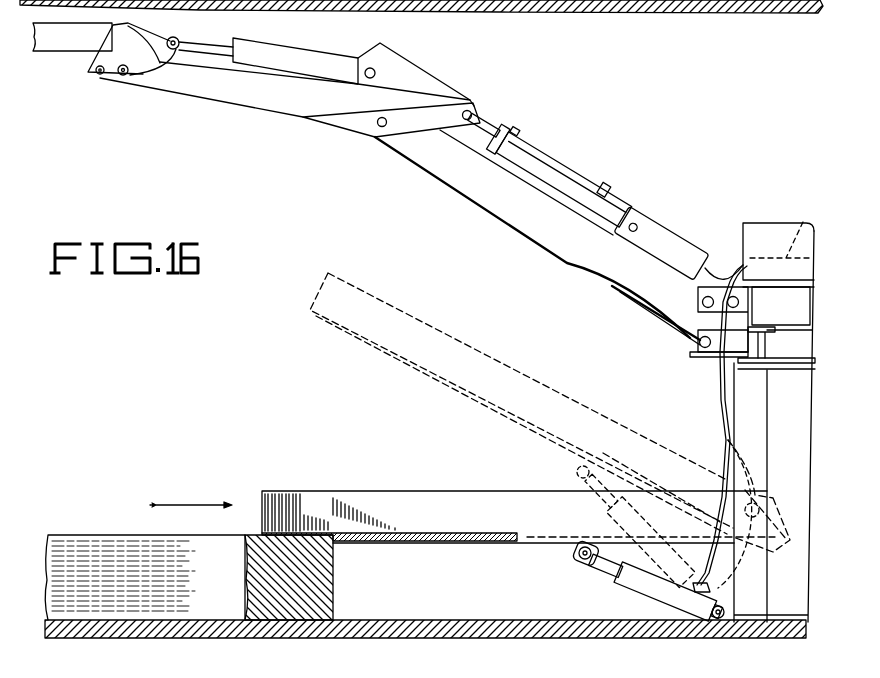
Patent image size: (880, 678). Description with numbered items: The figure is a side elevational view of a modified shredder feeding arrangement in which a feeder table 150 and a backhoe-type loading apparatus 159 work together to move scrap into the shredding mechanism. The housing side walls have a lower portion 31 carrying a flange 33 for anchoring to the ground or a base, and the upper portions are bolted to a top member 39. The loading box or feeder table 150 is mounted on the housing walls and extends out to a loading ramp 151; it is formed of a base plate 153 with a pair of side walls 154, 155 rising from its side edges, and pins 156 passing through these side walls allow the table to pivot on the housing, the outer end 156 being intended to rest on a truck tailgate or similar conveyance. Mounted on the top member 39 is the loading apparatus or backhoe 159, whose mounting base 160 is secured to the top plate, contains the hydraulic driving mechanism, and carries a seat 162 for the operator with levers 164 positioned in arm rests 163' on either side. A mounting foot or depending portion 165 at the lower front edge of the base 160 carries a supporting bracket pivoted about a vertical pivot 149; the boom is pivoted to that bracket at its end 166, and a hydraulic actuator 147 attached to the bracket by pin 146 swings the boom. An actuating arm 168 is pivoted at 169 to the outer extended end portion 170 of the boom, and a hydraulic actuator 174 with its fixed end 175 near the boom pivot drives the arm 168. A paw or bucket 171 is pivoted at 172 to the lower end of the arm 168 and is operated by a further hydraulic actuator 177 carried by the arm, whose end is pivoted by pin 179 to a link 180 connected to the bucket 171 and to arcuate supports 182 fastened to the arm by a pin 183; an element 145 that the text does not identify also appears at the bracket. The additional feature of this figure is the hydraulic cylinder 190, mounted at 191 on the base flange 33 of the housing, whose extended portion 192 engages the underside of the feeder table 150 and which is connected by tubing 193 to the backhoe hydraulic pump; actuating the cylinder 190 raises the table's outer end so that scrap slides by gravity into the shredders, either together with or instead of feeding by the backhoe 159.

The lower portion 31 is at (760, 597).
The flange 33 is at (777, 622).
The top member 39 is at (802, 366).
The pivot pin 145 is at (740, 302).
The pin 146 is at (693, 343).
The hydraulic actuator 147 is at (670, 308).
The vertical pivot 149 is at (712, 360).
The feeder table 150 is at (383, 496).
The loading ramp 151 is at (103, 507).
The base plate 153 is at (437, 544).
The side wall 154 is at (547, 393).
The side wall 155 is at (450, 502).
The pins 156 is at (728, 453).
The backhoe 159 is at (647, 228).
The mounting base 160 is at (763, 235).
The seat 162 is at (782, 229).
The arm rests 163' is at (728, 218).
The levers 164 is at (700, 293).
The depending portion 165 is at (690, 348).
The boom end 166 is at (662, 288).
The actuating arm 168 is at (268, 100).
The pivot 169 is at (380, 127).
The outer extended end portion 170 is at (465, 182).
The bucket 171 is at (62, 48).
The pivot 172 is at (97, 78).
The hydraulic actuator 174 is at (543, 163).
The fixed end 175 is at (607, 202).
The hydraulic actuator 177 is at (313, 42).
The pin 179 is at (190, 44).
The link 180 is at (165, 40).
The arcuate supports 182 is at (140, 77).
The pin 183 is at (100, 76).
The hydraulic cylinder 190 is at (636, 583).
The mounting 191 is at (723, 604).
The extended portion 192 is at (578, 563).
The tubing 193 is at (727, 408).